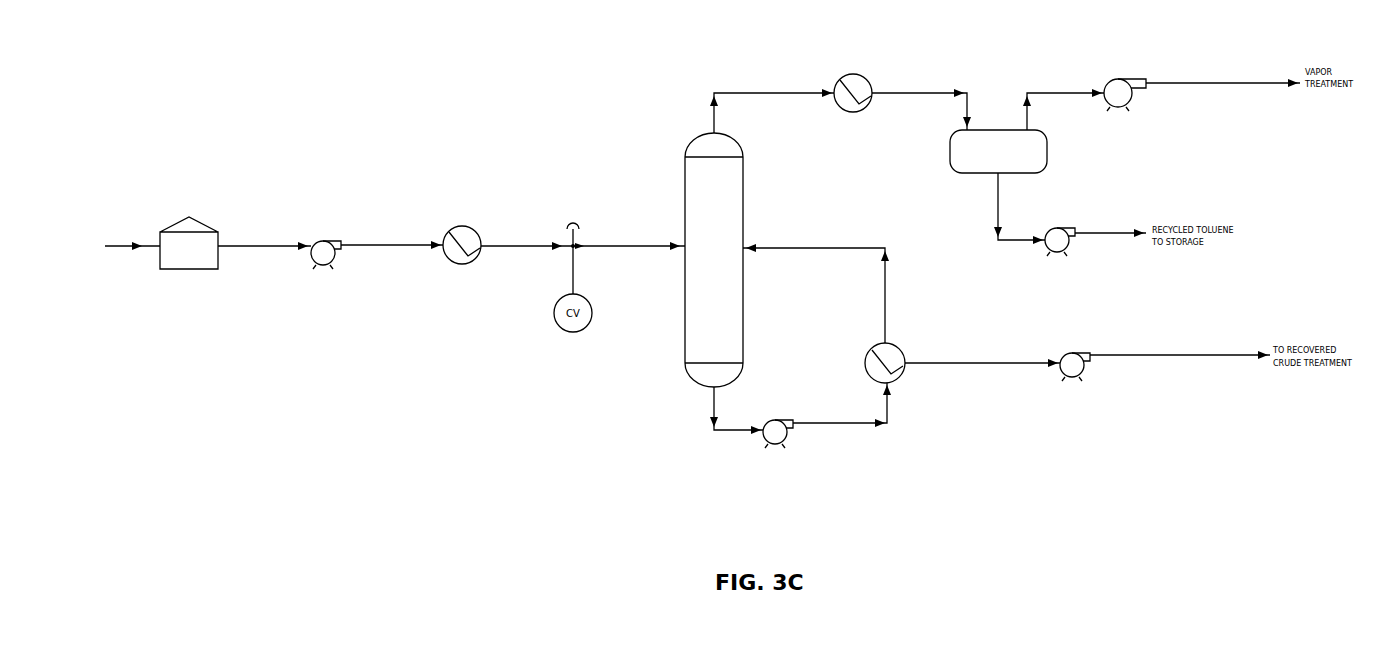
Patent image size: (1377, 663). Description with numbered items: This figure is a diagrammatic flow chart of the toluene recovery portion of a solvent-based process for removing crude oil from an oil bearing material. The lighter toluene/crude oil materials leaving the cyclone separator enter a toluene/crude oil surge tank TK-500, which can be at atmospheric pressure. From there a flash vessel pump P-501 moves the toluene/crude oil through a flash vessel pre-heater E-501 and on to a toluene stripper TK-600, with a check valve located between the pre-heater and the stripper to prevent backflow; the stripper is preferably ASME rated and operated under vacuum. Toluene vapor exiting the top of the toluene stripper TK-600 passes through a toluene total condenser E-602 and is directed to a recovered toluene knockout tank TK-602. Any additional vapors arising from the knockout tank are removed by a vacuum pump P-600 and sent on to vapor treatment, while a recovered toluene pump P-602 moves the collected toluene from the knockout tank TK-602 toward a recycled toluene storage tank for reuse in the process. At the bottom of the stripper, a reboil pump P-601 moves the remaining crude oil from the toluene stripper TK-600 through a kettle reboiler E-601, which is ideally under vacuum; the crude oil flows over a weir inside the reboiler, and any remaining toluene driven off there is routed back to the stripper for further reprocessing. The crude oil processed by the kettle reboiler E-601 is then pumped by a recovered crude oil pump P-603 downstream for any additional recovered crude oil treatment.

The toluene/crude oil surge tank TK-500 is at (226, 203).
The flash vessel pump P-501 is at (355, 305).
The flash vessel pre-heater E-501 is at (492, 303).
The toluene stripper TK-600 is at (665, 155).
The toluene total condenser E-602 is at (881, 139).
The recovered toluene knockout tank TK-602 is at (1036, 165).
The vacuum pump P-600 is at (1150, 145).
The recovered toluene pump P-602 is at (1087, 275).
The reboil pump P-601 is at (806, 470).
The kettle reboiler E-601 is at (978, 402).
The recovered crude oil pump P-603 is at (1102, 405).